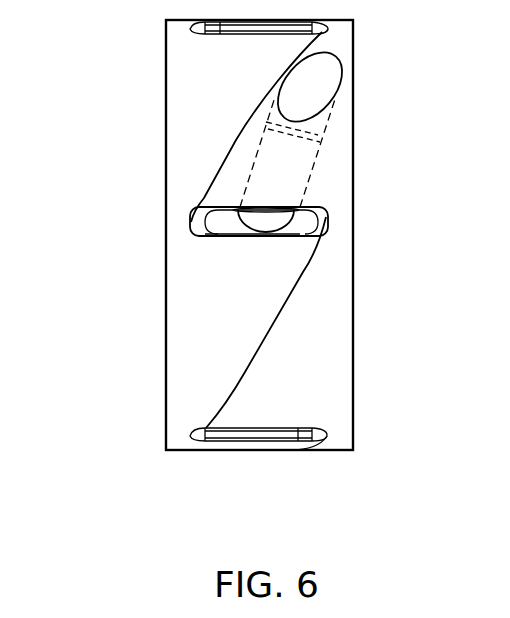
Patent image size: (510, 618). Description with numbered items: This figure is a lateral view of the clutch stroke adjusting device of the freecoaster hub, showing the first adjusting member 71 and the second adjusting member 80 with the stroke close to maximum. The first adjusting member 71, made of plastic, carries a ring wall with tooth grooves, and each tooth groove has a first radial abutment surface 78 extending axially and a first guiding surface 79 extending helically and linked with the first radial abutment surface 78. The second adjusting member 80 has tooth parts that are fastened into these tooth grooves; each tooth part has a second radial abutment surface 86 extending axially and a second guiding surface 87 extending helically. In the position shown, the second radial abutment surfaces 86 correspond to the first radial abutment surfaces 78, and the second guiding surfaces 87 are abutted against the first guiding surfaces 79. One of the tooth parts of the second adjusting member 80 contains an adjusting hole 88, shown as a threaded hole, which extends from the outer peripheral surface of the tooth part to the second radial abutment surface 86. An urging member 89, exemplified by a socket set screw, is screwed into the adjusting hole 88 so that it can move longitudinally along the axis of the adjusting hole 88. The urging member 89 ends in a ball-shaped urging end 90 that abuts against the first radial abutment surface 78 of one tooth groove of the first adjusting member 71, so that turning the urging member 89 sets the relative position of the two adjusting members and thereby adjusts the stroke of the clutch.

The first adjusting member 71 is at (144, 408).
The first radial abutment surface 78 is at (232, 236).
The first guiding surface 79 is at (250, 110).
The second adjusting member 80 is at (370, 414).
The second radial abutment surface 86 is at (307, 209).
The second guiding surface 87 is at (207, 155).
The adjusting hole 88 is at (315, 78).
The urging member 89 is at (325, 125).
The urging end 90 is at (270, 227).